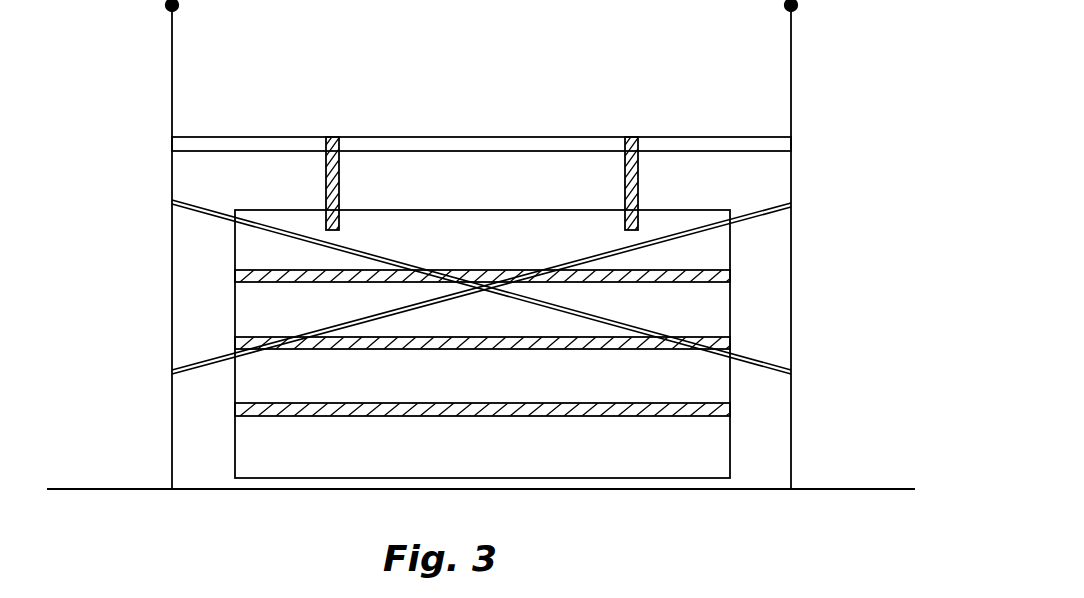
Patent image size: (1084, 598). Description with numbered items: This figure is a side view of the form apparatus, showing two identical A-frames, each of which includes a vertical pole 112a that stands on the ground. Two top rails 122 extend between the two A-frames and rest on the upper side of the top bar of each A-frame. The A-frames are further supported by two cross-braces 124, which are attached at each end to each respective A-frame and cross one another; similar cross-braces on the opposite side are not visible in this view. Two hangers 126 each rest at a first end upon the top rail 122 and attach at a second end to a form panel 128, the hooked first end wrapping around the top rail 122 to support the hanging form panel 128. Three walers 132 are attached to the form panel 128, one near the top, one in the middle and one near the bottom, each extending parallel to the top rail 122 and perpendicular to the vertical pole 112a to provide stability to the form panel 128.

The vertical pole 112a is at (172, 442).
The top rail 122 is at (448, 137).
The cross-brace 124 is at (206, 220).
The hanger 126 is at (625, 175).
The form panel 128 is at (687, 381).
The waler 132 is at (443, 349).